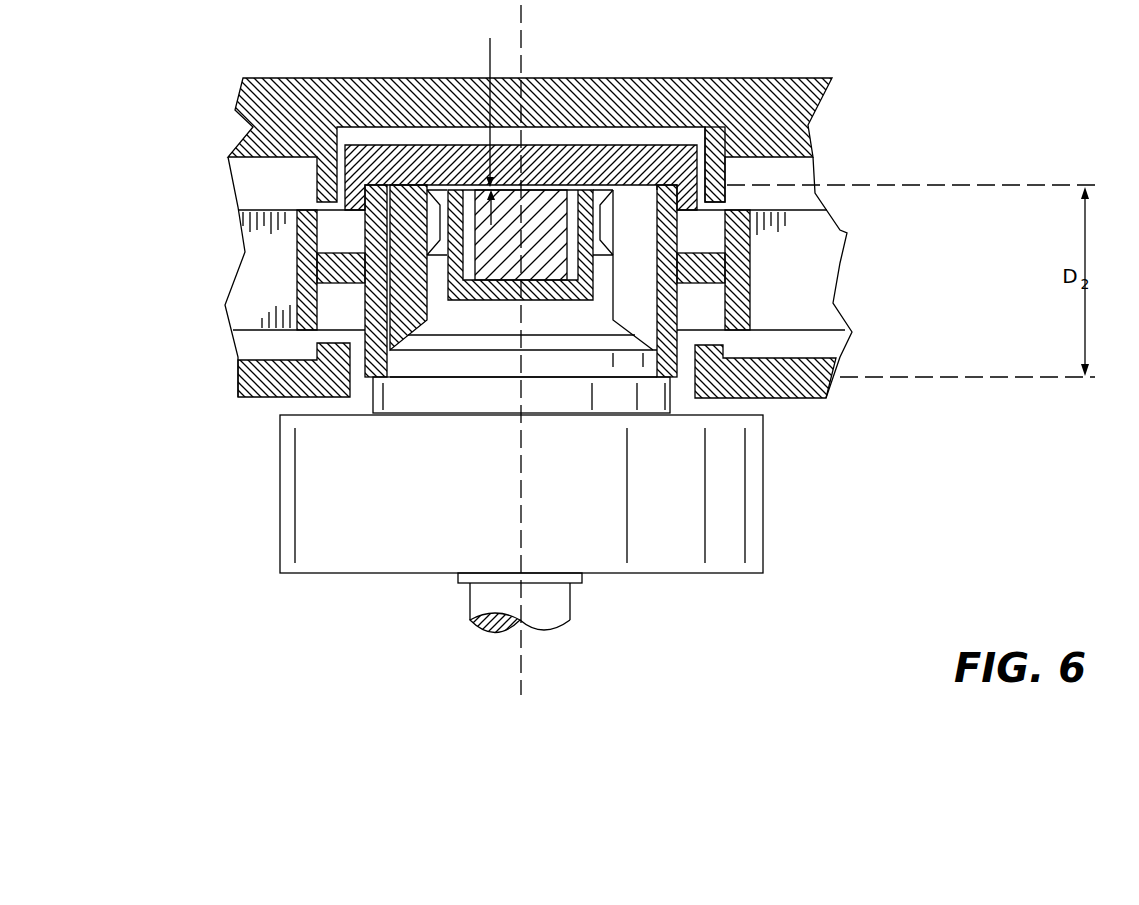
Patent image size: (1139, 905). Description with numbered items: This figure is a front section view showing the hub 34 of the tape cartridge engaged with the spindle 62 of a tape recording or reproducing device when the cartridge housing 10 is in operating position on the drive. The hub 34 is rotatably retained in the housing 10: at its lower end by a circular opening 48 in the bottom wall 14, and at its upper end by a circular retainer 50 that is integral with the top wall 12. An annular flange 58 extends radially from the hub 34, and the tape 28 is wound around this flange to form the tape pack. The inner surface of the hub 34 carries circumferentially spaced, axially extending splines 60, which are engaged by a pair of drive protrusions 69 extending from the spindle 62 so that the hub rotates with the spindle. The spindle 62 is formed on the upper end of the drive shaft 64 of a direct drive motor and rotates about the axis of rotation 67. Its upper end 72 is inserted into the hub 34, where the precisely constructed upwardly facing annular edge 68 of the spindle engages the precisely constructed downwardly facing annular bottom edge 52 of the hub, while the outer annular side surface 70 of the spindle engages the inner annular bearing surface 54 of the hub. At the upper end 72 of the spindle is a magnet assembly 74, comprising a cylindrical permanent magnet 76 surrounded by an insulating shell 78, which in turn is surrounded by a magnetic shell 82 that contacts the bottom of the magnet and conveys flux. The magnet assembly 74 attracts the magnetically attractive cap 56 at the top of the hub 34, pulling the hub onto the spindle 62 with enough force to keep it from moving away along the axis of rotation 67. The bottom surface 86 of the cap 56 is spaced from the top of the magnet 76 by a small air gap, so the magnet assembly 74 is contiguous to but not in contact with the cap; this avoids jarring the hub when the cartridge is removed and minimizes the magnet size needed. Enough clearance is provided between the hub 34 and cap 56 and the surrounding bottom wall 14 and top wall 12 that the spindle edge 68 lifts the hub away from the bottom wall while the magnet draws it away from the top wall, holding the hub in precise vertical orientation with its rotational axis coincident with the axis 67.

The cartridge housing 10 is at (311, 54).
The top wall 12 is at (805, 103).
The bottom wall 14 is at (840, 363).
The tape 28 is at (257, 277).
The hub 34 is at (763, 254).
The circular opening 48 is at (680, 390).
The circular retainer 50 is at (713, 167).
The annular bottom edge 52 is at (655, 393).
The inner annular bearing surface 54 is at (387, 363).
The cap 56 is at (440, 145).
The annular flange 58 is at (737, 288).
The splines 60 is at (405, 185).
The spindle 62 is at (280, 495).
The drive shaft 64 is at (557, 603).
The axis of rotation 67 is at (520, 677).
The annular edge 68 is at (478, 350).
The drive protrusions 69 is at (365, 298).
The outer annular side surface 70 is at (462, 362).
The upper end of the spindle 72 is at (553, 317).
The magnet assembly 74 is at (555, 190).
The magnet 76 is at (489, 256).
The insulating shell 78 is at (573, 306).
The magnetic shell 82 is at (504, 307).
The bottom surface of the cap 86 is at (640, 200).